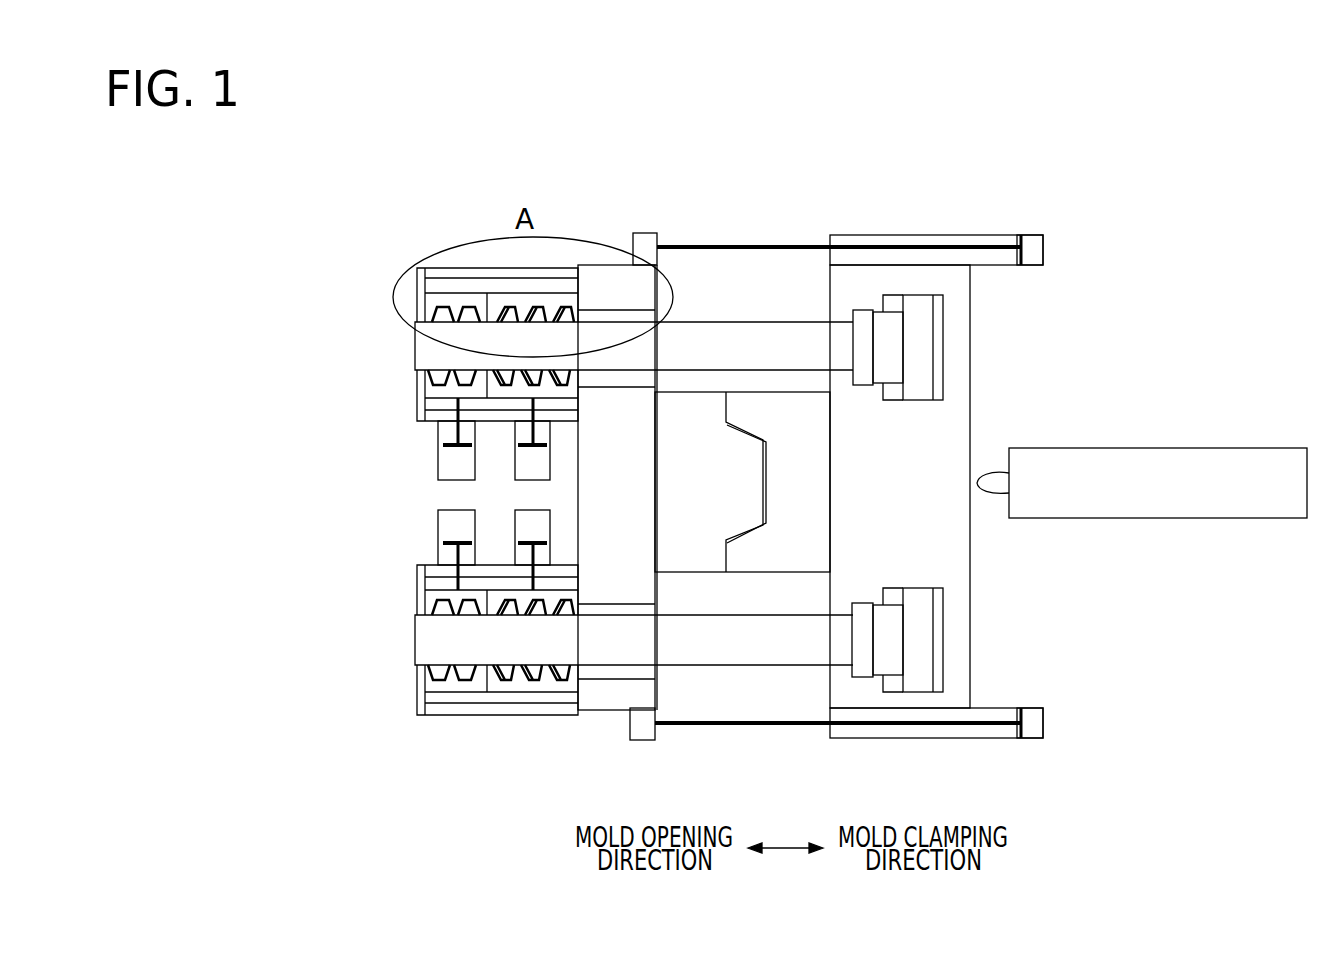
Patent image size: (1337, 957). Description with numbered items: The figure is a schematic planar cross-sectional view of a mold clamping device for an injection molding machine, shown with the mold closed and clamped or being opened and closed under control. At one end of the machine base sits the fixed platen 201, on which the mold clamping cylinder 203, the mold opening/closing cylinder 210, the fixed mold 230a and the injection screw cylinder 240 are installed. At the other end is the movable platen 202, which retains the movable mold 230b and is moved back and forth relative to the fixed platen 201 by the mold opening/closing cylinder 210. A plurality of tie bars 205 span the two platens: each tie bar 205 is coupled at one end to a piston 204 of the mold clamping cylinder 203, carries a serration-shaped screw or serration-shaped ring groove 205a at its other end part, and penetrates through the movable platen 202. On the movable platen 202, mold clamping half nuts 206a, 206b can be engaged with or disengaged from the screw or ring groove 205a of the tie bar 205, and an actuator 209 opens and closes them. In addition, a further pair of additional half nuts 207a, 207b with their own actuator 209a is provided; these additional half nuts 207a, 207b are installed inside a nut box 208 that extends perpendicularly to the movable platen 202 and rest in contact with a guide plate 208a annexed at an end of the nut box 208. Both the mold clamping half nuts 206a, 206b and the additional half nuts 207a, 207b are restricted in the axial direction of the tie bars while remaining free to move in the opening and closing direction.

The fixed platen 201 is at (900, 470).
The movable platen 202 is at (617, 533).
The mold clamping cylinder 203 is at (937, 347).
The piston 204 is at (920, 323).
The tie bar 205 is at (820, 352).
The serration-shaped screw or ring groove 205a is at (497, 305).
The mold clamping half nut 206a is at (532, 302).
The mold clamping half nut 206b is at (520, 393).
The additional half nut 207a is at (453, 300).
The additional half nut 207b is at (453, 390).
The nut box 208 is at (533, 275).
The guide plate 208a is at (420, 292).
The actuator 209 is at (533, 458).
The actuator 209a is at (453, 452).
The mold opening/closing cylinder 210 is at (1033, 253).
The fixed mold 230a is at (793, 430).
The movable mold 230b is at (698, 508).
The injection screw cylinder 240 is at (1182, 490).